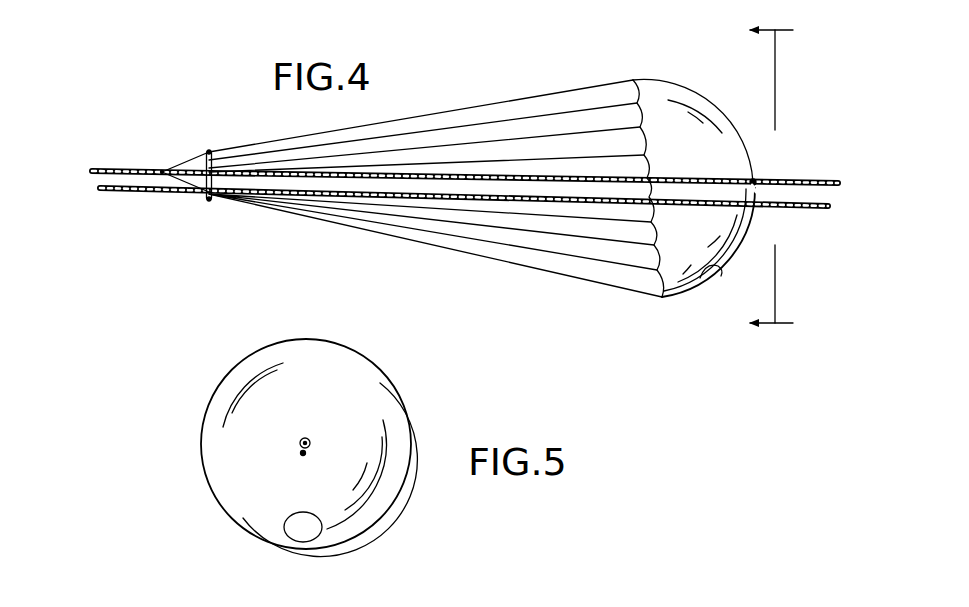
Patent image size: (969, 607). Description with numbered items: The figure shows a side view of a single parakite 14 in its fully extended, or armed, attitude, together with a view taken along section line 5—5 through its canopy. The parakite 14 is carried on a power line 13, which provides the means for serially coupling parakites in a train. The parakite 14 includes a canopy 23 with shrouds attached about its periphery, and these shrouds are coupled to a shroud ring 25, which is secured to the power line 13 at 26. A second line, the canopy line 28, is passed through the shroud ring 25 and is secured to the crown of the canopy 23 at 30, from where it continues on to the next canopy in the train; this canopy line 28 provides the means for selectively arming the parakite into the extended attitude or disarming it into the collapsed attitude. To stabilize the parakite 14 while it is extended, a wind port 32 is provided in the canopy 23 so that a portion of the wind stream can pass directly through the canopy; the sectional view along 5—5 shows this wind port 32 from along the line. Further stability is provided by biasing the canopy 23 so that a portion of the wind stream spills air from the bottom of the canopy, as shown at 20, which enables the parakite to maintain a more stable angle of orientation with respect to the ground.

In FIG. 4, the section line 5— 5 is at (781, 177).
In FIG. 4, the power line 13 is at (90, 171).
In FIG. 5, the power line 13 is at (306, 438).
In FIG. 4, the parakite 14 is at (539, 95).
In FIG. 4, the canopy bias 20 is at (630, 292).
In FIG. 4, the canopy 23 is at (660, 80).
In FIG. 5, the canopy 23 is at (402, 405).
In FIG. 4, the shroud ring 25 is at (209, 150).
In FIG. 4, the securing point 26 is at (162, 170).
In FIG. 4, the canopy line 28 is at (100, 191).
In FIG. 5, the canopy line 28 is at (303, 453).
In FIG. 4, the securing point 30 is at (757, 208).
In FIG. 4, the wind port 32 is at (708, 277).
In FIG. 5, the wind port 32 is at (312, 538).